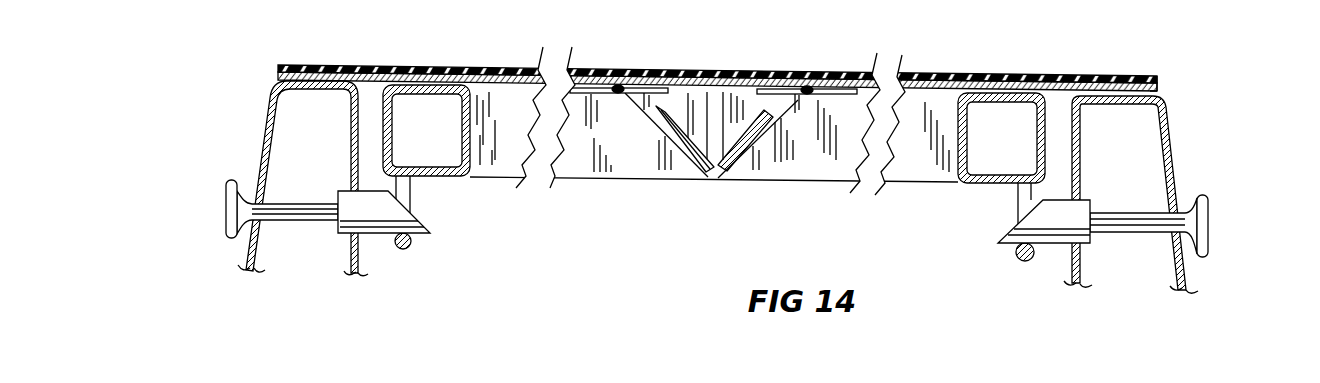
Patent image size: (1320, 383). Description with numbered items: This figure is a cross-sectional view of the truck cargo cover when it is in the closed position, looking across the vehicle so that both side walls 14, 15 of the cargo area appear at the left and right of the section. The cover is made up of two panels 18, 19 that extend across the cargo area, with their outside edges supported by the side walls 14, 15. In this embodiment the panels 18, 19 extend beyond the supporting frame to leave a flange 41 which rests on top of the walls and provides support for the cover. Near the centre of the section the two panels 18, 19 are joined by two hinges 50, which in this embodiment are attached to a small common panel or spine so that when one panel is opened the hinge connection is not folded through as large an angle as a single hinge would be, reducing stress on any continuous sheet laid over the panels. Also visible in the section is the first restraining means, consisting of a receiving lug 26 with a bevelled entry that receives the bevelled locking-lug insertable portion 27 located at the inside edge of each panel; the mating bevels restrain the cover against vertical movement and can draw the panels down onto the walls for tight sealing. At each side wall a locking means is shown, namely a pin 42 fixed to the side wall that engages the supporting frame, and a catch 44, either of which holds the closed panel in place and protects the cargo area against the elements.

The side wall 14 is at (1142, 173).
The side wall 15 is at (300, 160).
The panel 18 is at (1046, 82).
The panel 19 is at (432, 66).
The receiving lug 26 is at (712, 178).
The locking-lug insertable portion 27 is at (775, 178).
The flange 41 is at (1157, 78).
The pin 42 is at (1210, 228).
The catch 44 is at (1020, 258).
The hinge 50 is at (621, 86).